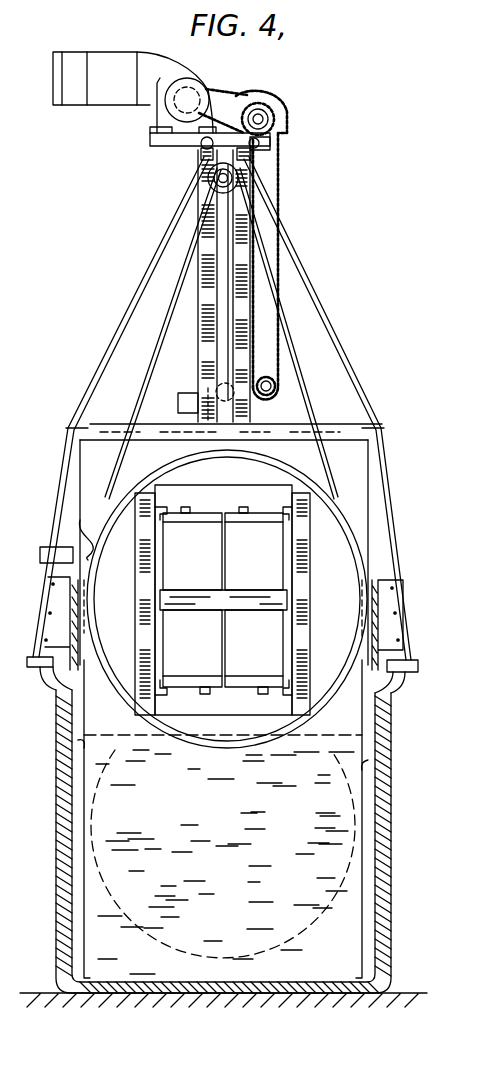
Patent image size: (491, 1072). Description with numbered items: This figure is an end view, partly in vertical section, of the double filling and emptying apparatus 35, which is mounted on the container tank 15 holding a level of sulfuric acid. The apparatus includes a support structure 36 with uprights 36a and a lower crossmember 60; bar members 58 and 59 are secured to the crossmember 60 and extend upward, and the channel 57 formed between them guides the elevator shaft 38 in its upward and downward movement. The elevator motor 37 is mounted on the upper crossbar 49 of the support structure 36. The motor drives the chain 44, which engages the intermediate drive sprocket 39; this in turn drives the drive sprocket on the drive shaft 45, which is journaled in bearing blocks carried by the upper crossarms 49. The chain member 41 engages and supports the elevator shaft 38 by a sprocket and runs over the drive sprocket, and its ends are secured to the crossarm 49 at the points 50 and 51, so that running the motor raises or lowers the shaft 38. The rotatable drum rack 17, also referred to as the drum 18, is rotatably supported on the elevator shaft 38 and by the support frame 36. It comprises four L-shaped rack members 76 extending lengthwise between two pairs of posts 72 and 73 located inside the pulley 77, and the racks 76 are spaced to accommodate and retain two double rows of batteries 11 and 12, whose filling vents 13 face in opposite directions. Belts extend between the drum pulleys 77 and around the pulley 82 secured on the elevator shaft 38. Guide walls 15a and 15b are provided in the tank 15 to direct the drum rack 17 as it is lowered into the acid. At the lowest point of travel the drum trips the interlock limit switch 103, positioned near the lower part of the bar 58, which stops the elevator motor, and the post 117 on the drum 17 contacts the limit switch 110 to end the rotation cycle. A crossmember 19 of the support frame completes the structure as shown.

The elevator motor 37 is at (117, 60).
The chain 44 is at (240, 92).
The intermediate drive sprocket 39 is at (262, 102).
The drive shaft 45 is at (264, 119).
The crossbar 49 is at (150, 142).
The chain end securement 50 is at (200, 148).
The chain end securement 51 is at (262, 145).
The elevator shaft 38 is at (208, 177).
The pulley 82 is at (212, 180).
The chain member 41 is at (281, 193).
The double filling and emptying apparatus 35 is at (222, 408).
The support structure 36 is at (360, 360).
The uprights 36a is at (317, 311).
The bar member 58 is at (208, 352).
The channel 57 is at (223, 360).
The interlock limit switch 103 is at (178, 407).
The bar member 59 is at (252, 404).
The shelf plate 19 is at (307, 430).
The crossmember 60 is at (347, 430).
The rotatable drum rack 17 is at (378, 550).
The limit switch 110 is at (41, 547).
The post 117 is at (80, 520).
The drum 18 is at (267, 465).
The pulley 77 is at (320, 498).
The post 72 is at (137, 593).
The post 73 is at (310, 594).
The batteries 11 is at (167, 546).
The batteries 12 is at (277, 654).
The filling vents 13 is at (190, 514).
The L-shaped rack members 76 is at (164, 507).
The container tank 15 is at (393, 718).
The guide wall 15a is at (80, 745).
The guide wall 15b is at (386, 768).